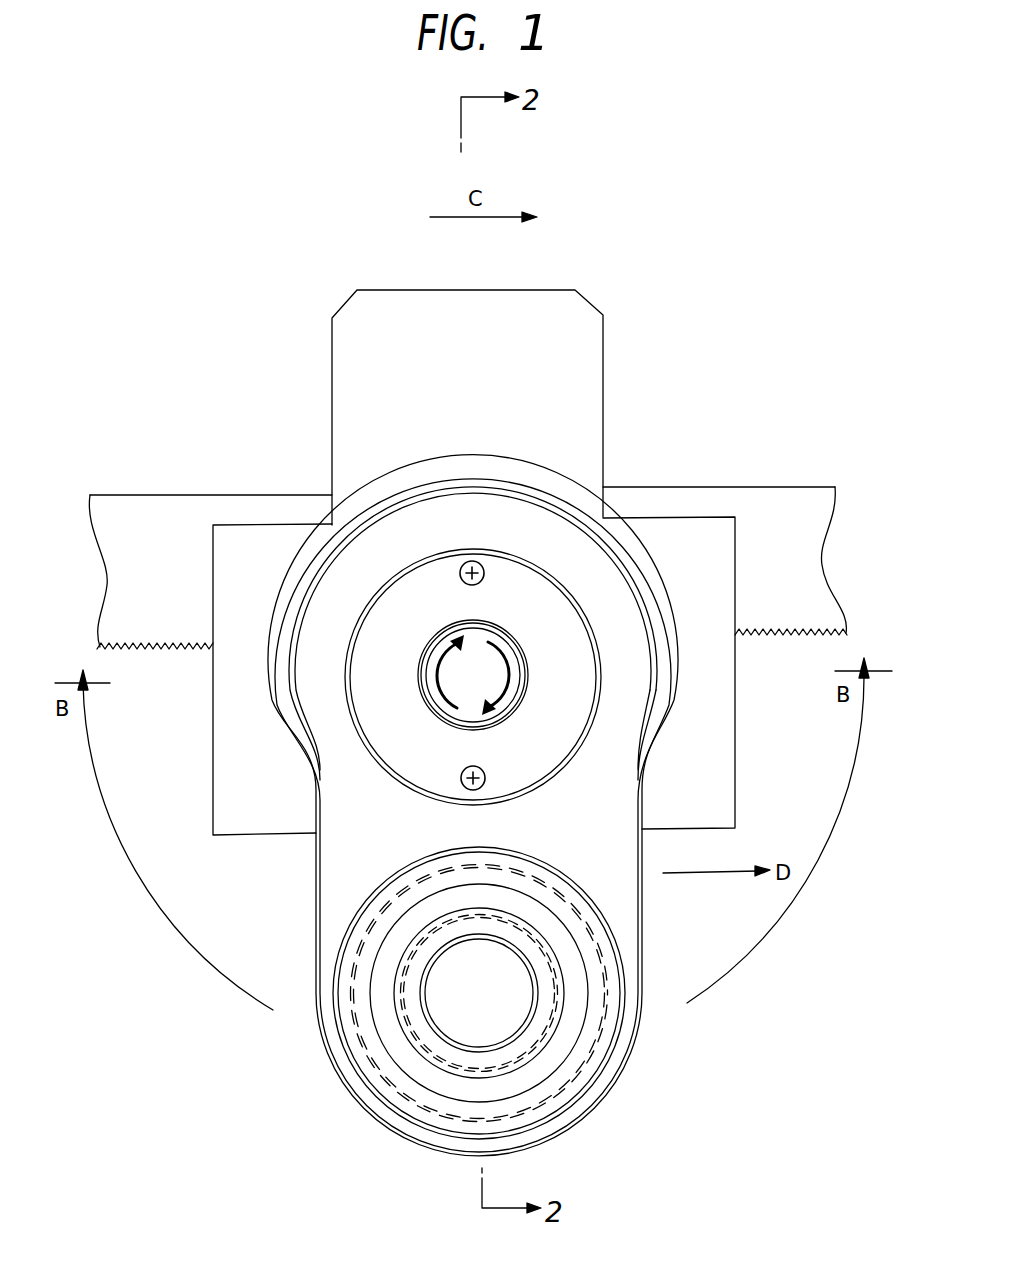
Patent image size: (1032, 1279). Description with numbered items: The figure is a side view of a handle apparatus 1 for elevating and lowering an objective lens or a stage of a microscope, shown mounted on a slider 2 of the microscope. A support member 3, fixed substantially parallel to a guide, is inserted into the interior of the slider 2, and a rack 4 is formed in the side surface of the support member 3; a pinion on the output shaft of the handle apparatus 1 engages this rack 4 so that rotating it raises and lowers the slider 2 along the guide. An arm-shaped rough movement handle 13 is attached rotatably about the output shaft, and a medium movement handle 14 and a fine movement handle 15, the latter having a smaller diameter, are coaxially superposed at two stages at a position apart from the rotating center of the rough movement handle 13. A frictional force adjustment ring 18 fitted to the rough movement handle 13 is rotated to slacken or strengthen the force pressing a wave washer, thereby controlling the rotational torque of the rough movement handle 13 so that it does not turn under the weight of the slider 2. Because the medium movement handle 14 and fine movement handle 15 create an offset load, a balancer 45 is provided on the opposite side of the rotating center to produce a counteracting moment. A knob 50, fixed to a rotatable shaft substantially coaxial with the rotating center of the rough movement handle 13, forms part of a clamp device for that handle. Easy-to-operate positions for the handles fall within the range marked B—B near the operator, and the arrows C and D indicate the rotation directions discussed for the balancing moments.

The handle apparatus 1 is at (468, 721).
The slider 2 is at (230, 775).
The support member 3 is at (173, 507).
The rack 4 is at (763, 637).
The rough movement handle 13 is at (624, 918).
The medium movement handle 14 is at (557, 1082).
The fine movement handle 15 is at (523, 993).
The frictional force adjustment ring 18 is at (615, 533).
The balancer 45 is at (583, 368).
The knob 50 is at (432, 688).